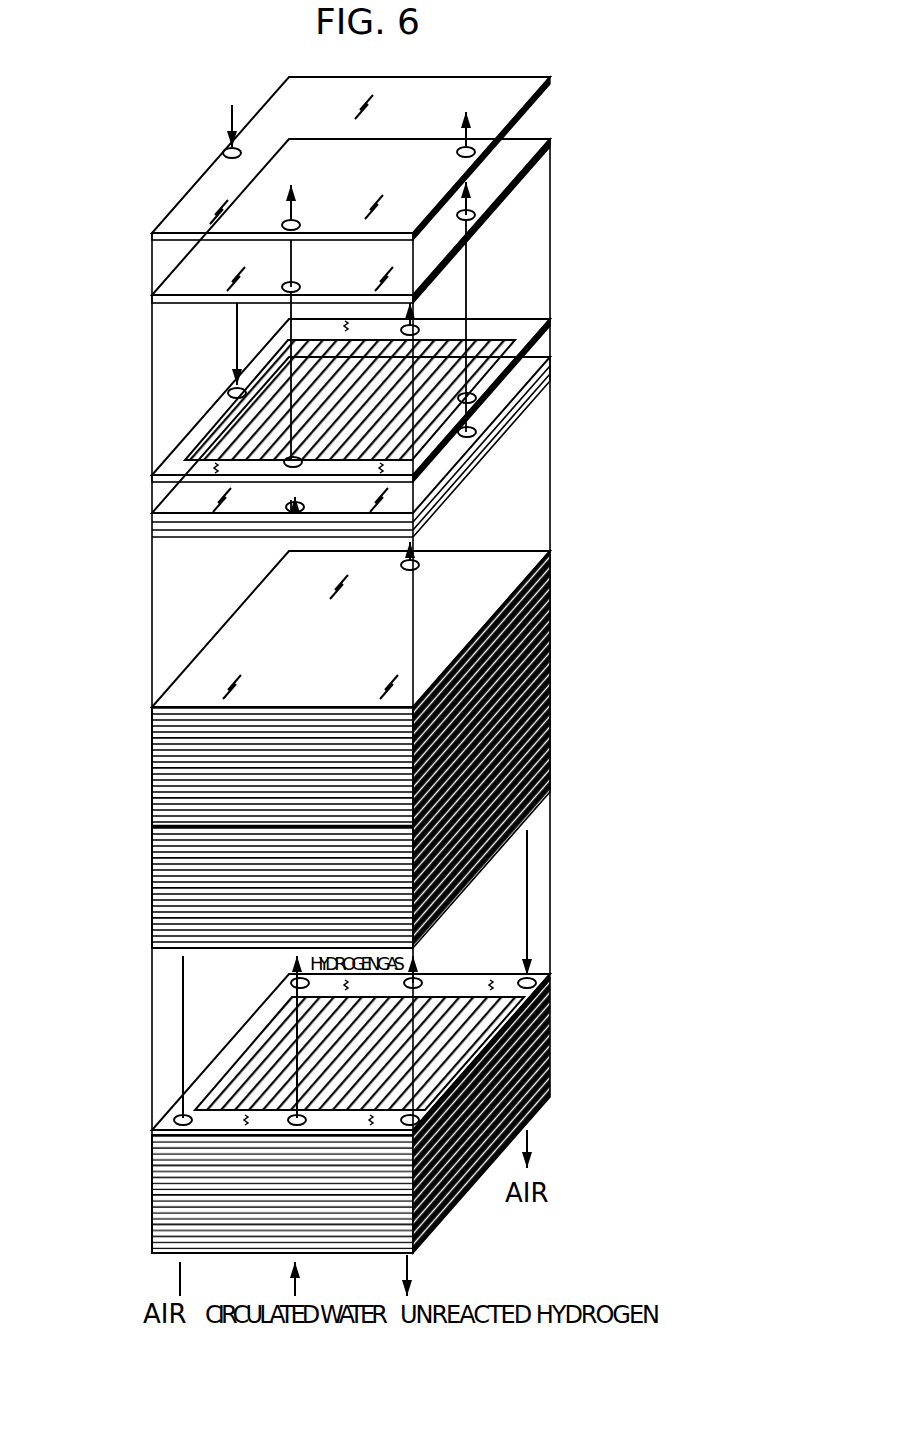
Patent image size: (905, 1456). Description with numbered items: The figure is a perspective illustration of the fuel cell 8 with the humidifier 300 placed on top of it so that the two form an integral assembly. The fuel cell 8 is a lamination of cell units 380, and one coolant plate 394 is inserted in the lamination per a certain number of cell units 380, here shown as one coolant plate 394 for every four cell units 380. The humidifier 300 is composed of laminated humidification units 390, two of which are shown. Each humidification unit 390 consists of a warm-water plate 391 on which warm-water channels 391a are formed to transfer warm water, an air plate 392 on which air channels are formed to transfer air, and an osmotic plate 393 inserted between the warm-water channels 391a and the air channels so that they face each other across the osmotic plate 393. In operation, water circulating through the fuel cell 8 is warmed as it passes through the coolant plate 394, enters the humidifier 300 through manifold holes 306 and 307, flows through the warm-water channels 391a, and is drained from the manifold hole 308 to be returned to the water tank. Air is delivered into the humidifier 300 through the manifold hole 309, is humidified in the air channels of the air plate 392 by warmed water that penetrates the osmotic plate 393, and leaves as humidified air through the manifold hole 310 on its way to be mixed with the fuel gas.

The fuel cell 8 is at (580, 555).
The humidifier 300 is at (86, 240).
The manifold hole 306 is at (420, 566).
The manifold hole 307 is at (418, 330).
The manifold hole 308 is at (292, 222).
The manifold hole 309 is at (241, 150).
The manifold hole 310 is at (457, 152).
The cell unit 380 is at (150, 767).
The humidification unit 390 is at (150, 537).
The warm-water plate 391 is at (382, 375).
The warm-water channels 391a is at (430, 337).
The air plate 392 is at (522, 89).
The osmotic plate 393 is at (532, 160).
The coolant plate 394 is at (152, 830).